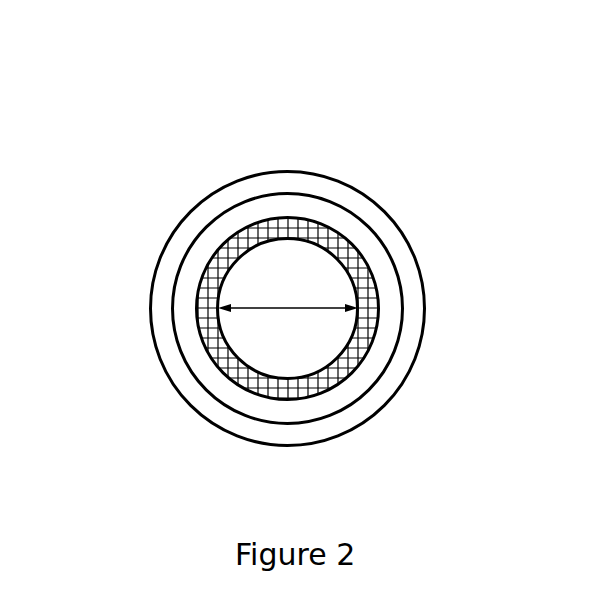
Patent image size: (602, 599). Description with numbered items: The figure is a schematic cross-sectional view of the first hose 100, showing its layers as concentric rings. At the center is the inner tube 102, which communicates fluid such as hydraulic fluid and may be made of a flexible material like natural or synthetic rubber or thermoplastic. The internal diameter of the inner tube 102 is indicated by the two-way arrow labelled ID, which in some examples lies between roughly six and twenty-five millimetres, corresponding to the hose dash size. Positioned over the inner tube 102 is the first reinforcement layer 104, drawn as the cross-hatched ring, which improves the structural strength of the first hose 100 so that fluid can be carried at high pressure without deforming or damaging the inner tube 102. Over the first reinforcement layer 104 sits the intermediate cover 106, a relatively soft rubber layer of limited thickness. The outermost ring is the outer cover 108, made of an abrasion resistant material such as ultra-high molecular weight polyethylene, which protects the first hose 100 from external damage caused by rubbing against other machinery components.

The first hose 100 is at (307, 244).
The inner tube 102 is at (215, 363).
The first reinforcement layer 104 is at (218, 318).
The intermediate cover 106 is at (205, 242).
The outer cover 108 is at (318, 171).
The inner diameter ID is at (323, 310).